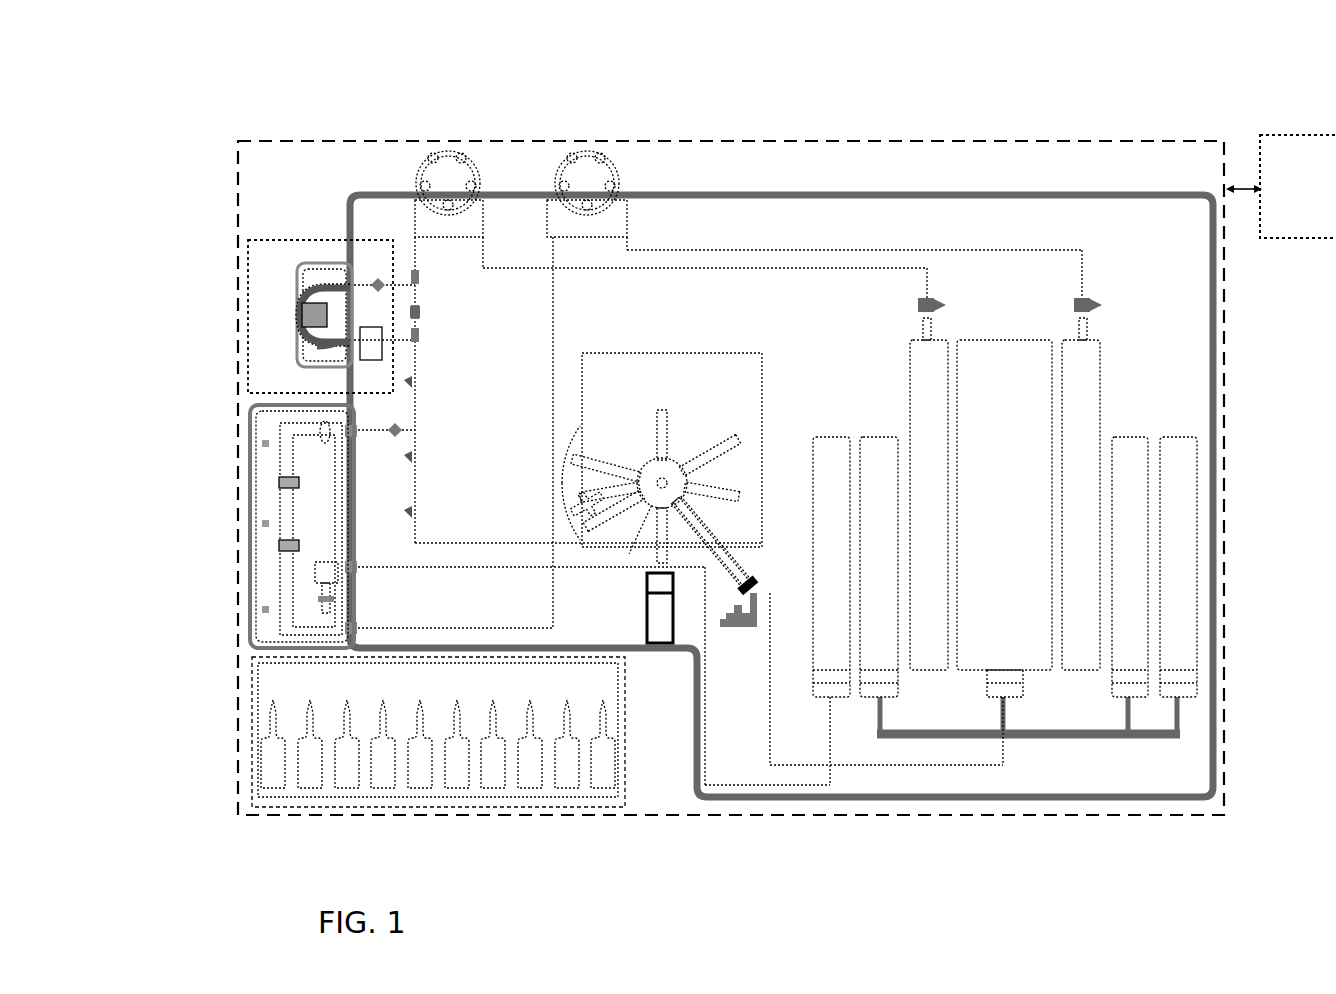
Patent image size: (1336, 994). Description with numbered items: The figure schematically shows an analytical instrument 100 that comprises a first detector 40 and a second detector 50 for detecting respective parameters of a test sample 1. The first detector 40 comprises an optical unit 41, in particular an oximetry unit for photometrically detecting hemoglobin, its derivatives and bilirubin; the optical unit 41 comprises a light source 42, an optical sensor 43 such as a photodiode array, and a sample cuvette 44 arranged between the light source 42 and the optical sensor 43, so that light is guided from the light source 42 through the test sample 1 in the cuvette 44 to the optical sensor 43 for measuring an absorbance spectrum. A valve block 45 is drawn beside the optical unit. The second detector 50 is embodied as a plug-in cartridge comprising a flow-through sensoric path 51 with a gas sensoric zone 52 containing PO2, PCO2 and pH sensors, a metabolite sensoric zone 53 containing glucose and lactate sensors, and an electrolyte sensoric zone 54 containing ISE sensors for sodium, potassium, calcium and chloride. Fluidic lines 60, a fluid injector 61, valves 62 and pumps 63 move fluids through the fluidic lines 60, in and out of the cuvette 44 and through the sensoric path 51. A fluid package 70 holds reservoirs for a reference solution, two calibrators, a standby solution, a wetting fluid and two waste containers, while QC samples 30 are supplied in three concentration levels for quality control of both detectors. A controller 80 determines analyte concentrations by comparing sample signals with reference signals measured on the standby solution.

The analytical instrument 100 is at (886, 124).
The controller 80 is at (1281, 186).
The fluid package 70 is at (1124, 312).
The pumps 63 is at (477, 163).
The valves 62 is at (417, 313).
The fluid injector 61 is at (673, 352).
The fluidic lines 60 is at (417, 375).
The first detector 40 is at (284, 221).
The optical unit 41 is at (282, 240).
The light source 42 is at (312, 296).
The optical sensor 43 is at (300, 316).
The sample cuvette 44 is at (297, 262).
The valve block 45 is at (372, 360).
The test sample 1 is at (317, 347).
The second detector 50 is at (247, 632).
The flow-through sensoric path 51 is at (276, 554).
The gas sensoric zone 52 is at (282, 450).
The metabolite sensoric zone 53 is at (282, 507).
The electrolyte sensoric zone 54 is at (282, 583).
The QC samples 30 is at (563, 793).